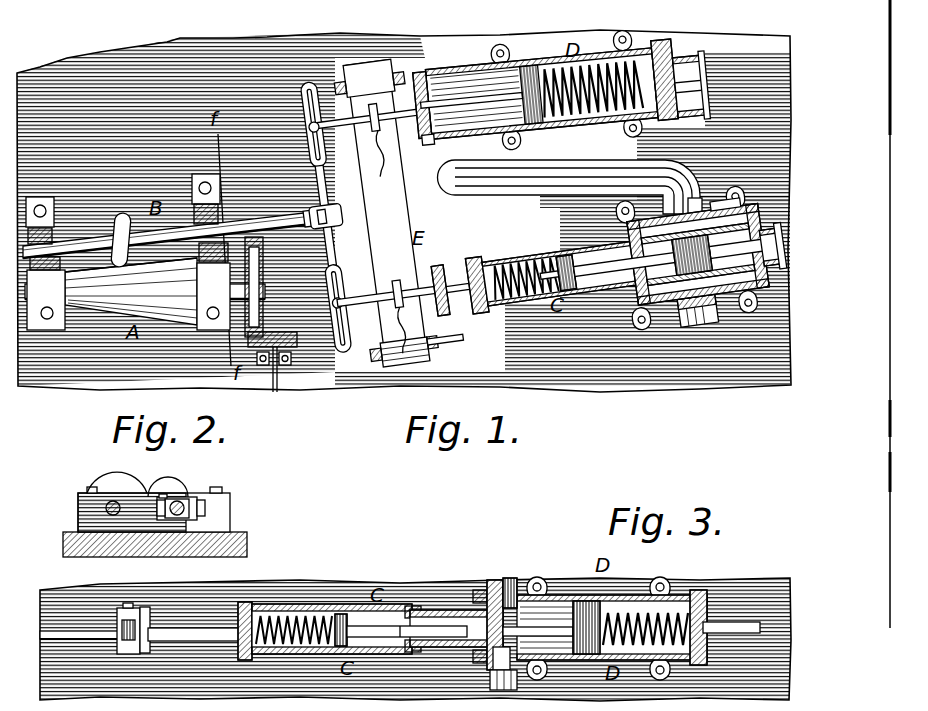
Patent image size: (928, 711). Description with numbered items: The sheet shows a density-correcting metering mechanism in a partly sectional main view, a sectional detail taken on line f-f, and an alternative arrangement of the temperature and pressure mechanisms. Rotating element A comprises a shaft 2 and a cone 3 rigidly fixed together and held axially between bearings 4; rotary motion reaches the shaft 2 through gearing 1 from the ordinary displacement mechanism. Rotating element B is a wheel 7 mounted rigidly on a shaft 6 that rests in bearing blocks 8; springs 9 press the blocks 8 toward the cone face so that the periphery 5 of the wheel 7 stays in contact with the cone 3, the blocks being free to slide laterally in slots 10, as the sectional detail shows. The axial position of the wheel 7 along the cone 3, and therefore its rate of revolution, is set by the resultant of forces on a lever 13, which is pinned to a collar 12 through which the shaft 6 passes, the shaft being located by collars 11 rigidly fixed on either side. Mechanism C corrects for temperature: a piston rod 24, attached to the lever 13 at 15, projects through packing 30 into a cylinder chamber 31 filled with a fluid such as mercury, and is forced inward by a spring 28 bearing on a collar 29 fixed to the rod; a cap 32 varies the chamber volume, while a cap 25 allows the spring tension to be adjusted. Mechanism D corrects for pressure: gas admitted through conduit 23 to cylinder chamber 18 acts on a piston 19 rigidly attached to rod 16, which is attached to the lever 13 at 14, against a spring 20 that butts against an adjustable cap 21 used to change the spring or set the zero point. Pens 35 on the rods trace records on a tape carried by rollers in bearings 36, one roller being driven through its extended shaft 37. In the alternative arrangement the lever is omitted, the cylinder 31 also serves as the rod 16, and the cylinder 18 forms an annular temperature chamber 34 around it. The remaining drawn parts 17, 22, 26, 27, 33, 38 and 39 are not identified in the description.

In FIG. 1, the gearing 1 is at (270, 340).
In FIG. 1, the shaft 2 is at (258, 292).
In FIG. 1, the cone 3 is at (160, 312).
In FIG. 2, the cone 3 is at (100, 481).
In FIG. 1, the bearings 4 is at (52, 316).
In FIG. 2, the bearings 4 is at (106, 508).
In FIG. 1, the periphery 5 is at (130, 270).
In FIG. 1, the shaft 6 is at (102, 240).
In FIG. 3, the shaft 6 is at (62, 630).
In FIG. 1, the wheel 7 is at (121, 214).
In FIG. 2, the wheel 7 is at (170, 488).
In FIG. 1, the bearing blocks 8 is at (52, 232).
In FIG. 2, the bearing blocks 8 is at (178, 518).
In FIG. 1, the springs 9 is at (52, 215).
In FIG. 2, the springs 9 is at (158, 512).
In FIG. 2, the slots 10 is at (160, 496).
In FIG. 1, the collars 11 is at (314, 208).
In FIG. 3, the collars 11 is at (119, 626).
In FIG. 1, the collar 12 is at (338, 220).
In FIG. 3, the collar 12 is at (144, 618).
In FIG. 1, the lever 13 is at (322, 183).
In FIG. 1, the attachment point 14 is at (318, 126).
In FIG. 1, the attachment point 15 is at (341, 300).
In FIG. 1, the rod 16 is at (422, 113).
In FIG. 3, the rod 16 is at (545, 632).
In FIG. 1, the nipple 17 is at (432, 112).
In FIG. 1, the cylinder chamber 18 is at (468, 76).
In FIG. 3, the cylinder chamber 18 is at (549, 598).
In FIG. 1, the piston 19 is at (530, 75).
In FIG. 3, the piston 19 is at (596, 612).
In FIG. 1, the spring 20 is at (582, 76).
In FIG. 3, the spring 20 is at (652, 620).
In FIG. 1, the adjustable cap 21 is at (690, 66).
In FIG. 1, the cap 22 is at (668, 45).
In FIG. 1, the conduit 23 is at (553, 170).
In FIG. 3, the conduit 23 is at (510, 590).
In FIG. 1, the piston rod 24 is at (420, 282).
In FIG. 3, the piston rod 24 is at (196, 631).
In FIG. 1, the cap 25 is at (448, 270).
In FIG. 1, the nut 26 is at (480, 266).
In FIG. 1, the cylinder tube 27 is at (522, 258).
In FIG. 3, the cylinder tube 27 is at (412, 607).
In FIG. 1, the spring 28 is at (552, 265).
In FIG. 3, the spring 28 is at (286, 618).
In FIG. 1, the collar 29 is at (584, 262).
In FIG. 3, the collar 29 is at (343, 616).
In FIG. 1, the packing 30 is at (628, 282).
In FIG. 3, the packing 30 is at (430, 614).
In FIG. 1, the cylinder chamber 31 is at (648, 255).
In FIG. 3, the cylinder chamber 31 is at (450, 638).
In FIG. 1, the cap 32 is at (765, 245).
In FIG. 1, the cap 33 is at (730, 208).
In FIG. 1, the annular temperature chamber 34 is at (704, 198).
In FIG. 1, the pens 35 is at (373, 130).
In FIG. 1, the bearings 36 is at (398, 78).
In FIG. 1, the shaft 37 is at (445, 351).
In FIG. 1, the ear 38 is at (623, 42).
In FIG. 3, the ear 38 is at (672, 588).
In FIG. 1, the ear 39 is at (745, 200).